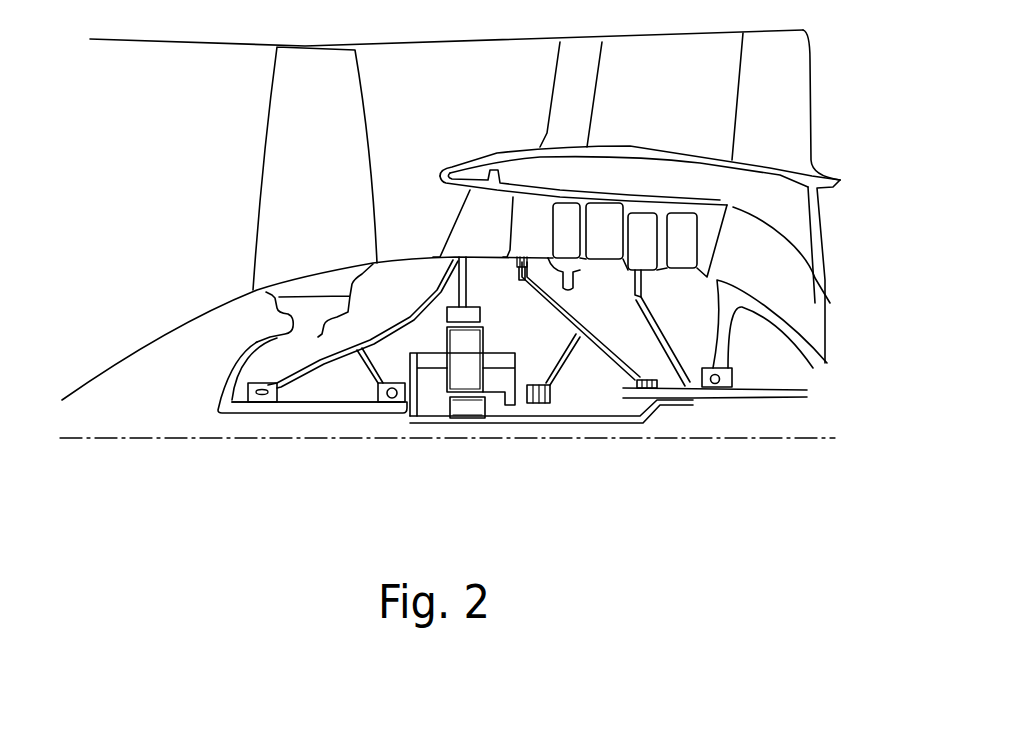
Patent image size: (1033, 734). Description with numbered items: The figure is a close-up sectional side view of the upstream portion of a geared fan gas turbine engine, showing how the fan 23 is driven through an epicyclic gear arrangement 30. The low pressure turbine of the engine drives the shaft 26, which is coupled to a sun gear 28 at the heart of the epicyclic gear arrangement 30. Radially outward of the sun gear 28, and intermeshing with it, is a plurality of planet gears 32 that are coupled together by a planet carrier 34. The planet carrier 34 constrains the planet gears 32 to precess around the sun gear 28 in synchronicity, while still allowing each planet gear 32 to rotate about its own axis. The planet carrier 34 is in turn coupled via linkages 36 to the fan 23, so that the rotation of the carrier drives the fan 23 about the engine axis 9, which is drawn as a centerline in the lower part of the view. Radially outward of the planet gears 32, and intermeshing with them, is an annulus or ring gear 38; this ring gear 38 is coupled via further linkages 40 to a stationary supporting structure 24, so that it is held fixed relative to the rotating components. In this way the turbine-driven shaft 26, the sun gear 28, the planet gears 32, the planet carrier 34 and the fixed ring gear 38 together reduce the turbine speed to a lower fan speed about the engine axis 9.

The engine axis 9 is at (243, 440).
The fan 23 is at (282, 172).
The stationary supporting structure 24 is at (473, 220).
The shaft 26 is at (613, 421).
The sun gear 28 is at (467, 407).
The epicyclic gear arrangement 30 is at (445, 370).
The planet gears 32 is at (452, 378).
The planet carrier 34 is at (507, 397).
The linkages 36 is at (420, 408).
The ring gear 38 is at (446, 318).
The linkages 40 is at (470, 293).